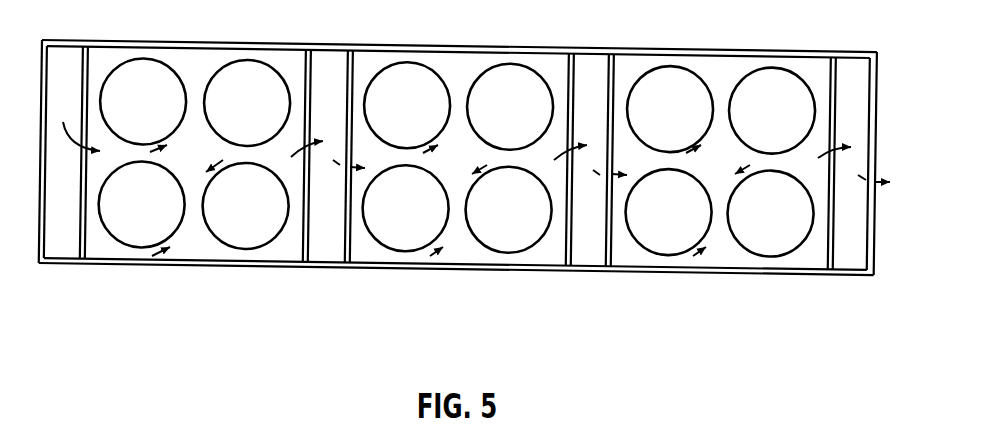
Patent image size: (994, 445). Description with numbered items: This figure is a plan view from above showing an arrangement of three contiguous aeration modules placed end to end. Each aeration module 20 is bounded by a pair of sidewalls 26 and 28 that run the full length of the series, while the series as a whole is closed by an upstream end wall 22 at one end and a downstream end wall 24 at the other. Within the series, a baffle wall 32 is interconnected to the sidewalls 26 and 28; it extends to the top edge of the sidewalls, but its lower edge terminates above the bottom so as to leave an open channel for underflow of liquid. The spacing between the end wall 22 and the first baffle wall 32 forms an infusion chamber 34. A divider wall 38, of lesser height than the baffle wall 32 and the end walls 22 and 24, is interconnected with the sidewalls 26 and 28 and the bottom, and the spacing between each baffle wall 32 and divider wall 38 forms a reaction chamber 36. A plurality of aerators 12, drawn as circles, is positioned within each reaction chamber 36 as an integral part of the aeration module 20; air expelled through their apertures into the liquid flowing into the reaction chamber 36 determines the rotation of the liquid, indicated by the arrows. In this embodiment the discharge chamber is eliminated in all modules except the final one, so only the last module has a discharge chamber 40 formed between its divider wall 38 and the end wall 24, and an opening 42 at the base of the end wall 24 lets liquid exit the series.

The aerator 12 is at (130, 113).
The aeration module 20 is at (470, 166).
The upstream end wall 22 is at (47, 229).
The downstream end wall 24 is at (866, 222).
The sidewall 26 is at (193, 268).
The sidewall 28 is at (112, 41).
The baffle wall 32 is at (81, 78).
The infusion chamber 34 is at (53, 173).
The reaction chamber 36 is at (217, 58).
The divider wall 38 is at (311, 82).
The discharge chamber 40 is at (863, 80).
The opening 42 is at (875, 157).